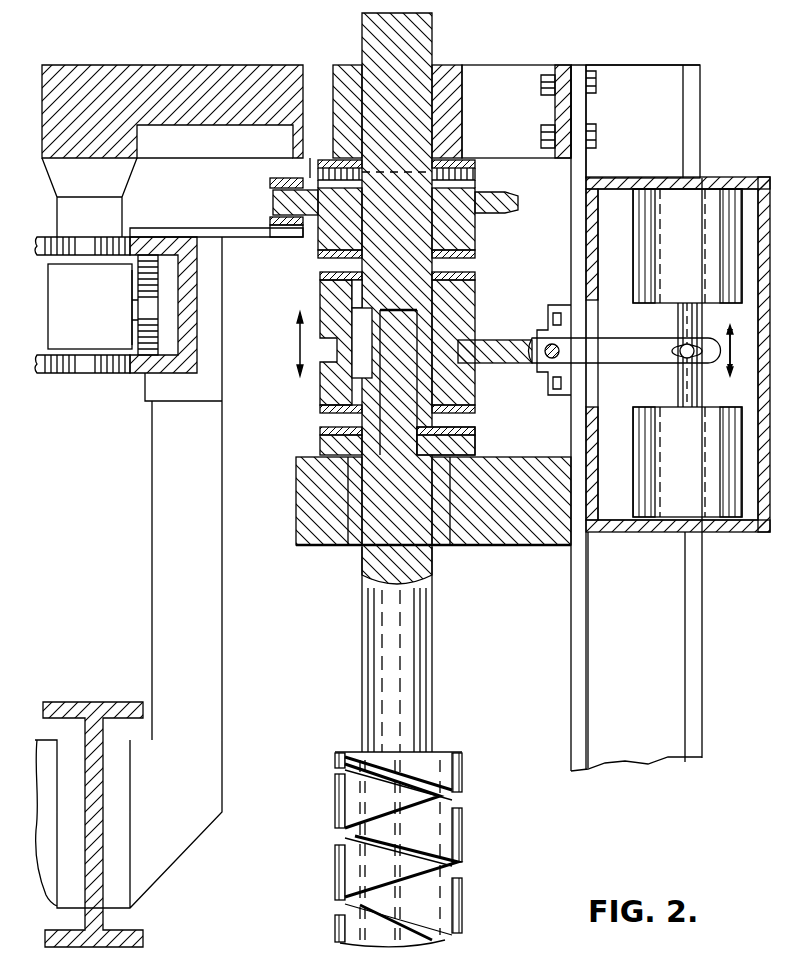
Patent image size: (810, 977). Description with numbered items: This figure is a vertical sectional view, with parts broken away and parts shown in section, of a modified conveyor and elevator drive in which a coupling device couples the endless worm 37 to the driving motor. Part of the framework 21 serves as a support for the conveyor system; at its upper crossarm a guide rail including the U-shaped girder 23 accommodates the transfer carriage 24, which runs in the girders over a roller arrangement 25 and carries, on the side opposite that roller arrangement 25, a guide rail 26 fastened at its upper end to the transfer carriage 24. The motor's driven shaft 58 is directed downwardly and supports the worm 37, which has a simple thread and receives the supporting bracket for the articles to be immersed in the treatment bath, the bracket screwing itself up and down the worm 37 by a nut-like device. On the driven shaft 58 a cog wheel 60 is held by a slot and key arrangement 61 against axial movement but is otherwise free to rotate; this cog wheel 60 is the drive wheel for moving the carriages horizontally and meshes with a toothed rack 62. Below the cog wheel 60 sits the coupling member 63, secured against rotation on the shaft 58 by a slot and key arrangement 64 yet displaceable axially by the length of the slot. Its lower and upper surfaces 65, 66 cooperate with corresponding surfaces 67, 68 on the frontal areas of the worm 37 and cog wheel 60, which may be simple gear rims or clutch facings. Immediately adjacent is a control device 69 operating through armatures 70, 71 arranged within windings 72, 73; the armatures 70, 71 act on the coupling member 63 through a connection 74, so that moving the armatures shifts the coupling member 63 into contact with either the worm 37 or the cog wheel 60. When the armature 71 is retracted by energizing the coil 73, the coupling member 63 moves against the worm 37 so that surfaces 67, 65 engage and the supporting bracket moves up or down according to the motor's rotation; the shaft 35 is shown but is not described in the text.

The framework 21 is at (172, 467).
The U-shaped girder 23 is at (146, 376).
The transfer carriage 24 is at (676, 143).
The roller arrangement 25 is at (72, 314).
The guide rail 26 is at (665, 668).
The shaft 35 is at (427, 657).
The worm 37 is at (447, 843).
The driven shaft 58 is at (428, 56).
The cog wheel 60 is at (497, 212).
The slot and key arrangement 61 is at (478, 176).
The toothed rack 62 is at (268, 183).
The coupling member 63 is at (330, 294).
The slot and key arrangement 64 is at (362, 366).
The lower surface 65 is at (326, 413).
The upper surface 66 is at (320, 274).
The corresponding surface 67 is at (470, 430).
The corresponding surface 68 is at (422, 221).
The control device 69 is at (711, 541).
The armature 70 is at (657, 252).
The armature 71 is at (657, 474).
The winding 72 is at (636, 186).
The winding 73 is at (656, 524).
The connection 74 is at (516, 343).